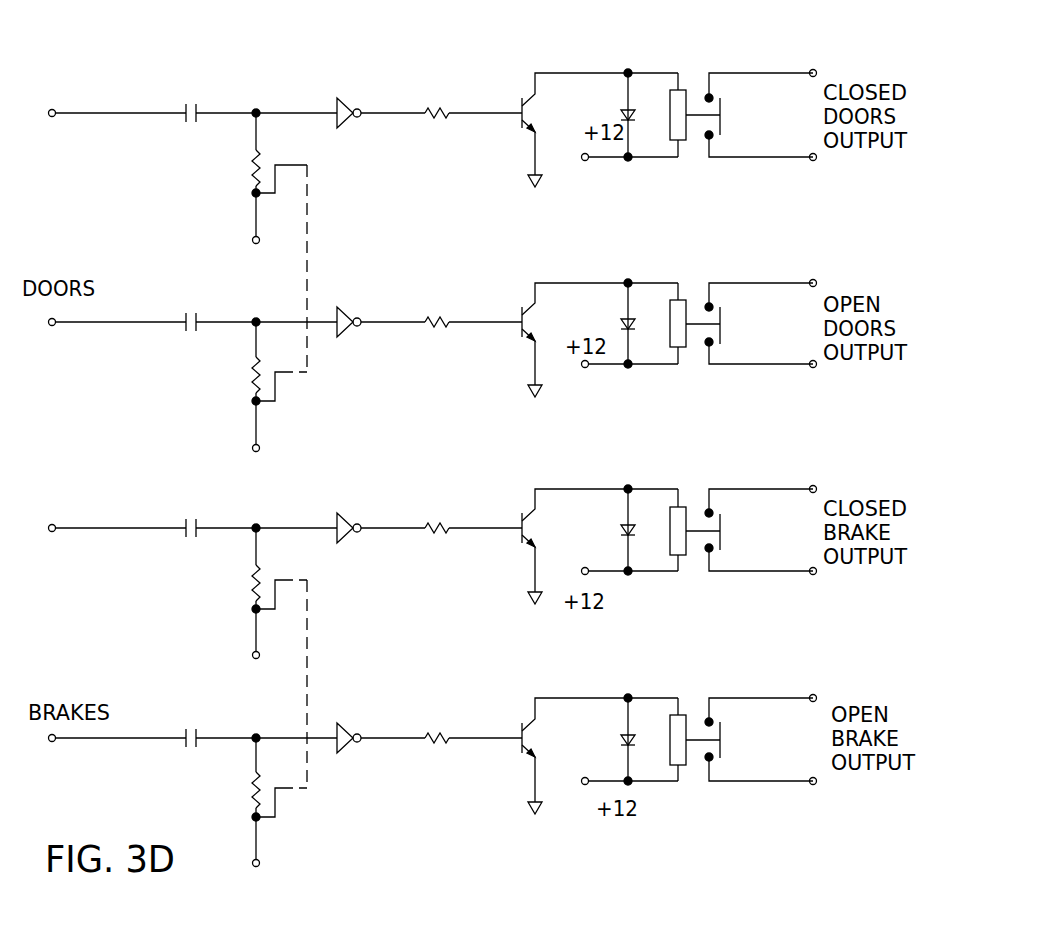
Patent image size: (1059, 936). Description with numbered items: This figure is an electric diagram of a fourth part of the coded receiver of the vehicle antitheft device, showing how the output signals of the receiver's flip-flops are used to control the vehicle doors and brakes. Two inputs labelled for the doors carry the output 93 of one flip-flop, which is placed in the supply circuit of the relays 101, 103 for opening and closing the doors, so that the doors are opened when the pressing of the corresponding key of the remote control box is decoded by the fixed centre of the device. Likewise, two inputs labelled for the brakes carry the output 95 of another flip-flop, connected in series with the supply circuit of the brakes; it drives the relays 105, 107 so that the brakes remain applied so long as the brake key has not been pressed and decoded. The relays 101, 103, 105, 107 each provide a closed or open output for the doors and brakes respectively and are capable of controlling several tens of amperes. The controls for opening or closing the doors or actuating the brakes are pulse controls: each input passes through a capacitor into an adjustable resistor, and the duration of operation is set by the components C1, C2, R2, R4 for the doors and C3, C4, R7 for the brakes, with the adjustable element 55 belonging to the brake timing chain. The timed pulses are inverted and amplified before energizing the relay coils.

The output of the flip-flop 93 is at (130, 111).
The output of the flip-flop 95 is at (130, 527).
The potentiometer 55 is at (252, 597).
The relay 101 is at (681, 100).
The relay 103 is at (690, 308).
The relay 105 is at (690, 530).
The relay 107 is at (693, 740).
The capacitor C1 is at (211, 78).
The capacitor C2 is at (200, 318).
The capacitor C3 is at (200, 528).
The capacitor C4 is at (200, 738).
The resistor R2 is at (264, 172).
The resistor R4 is at (252, 383).
The resistor R7 is at (252, 808).